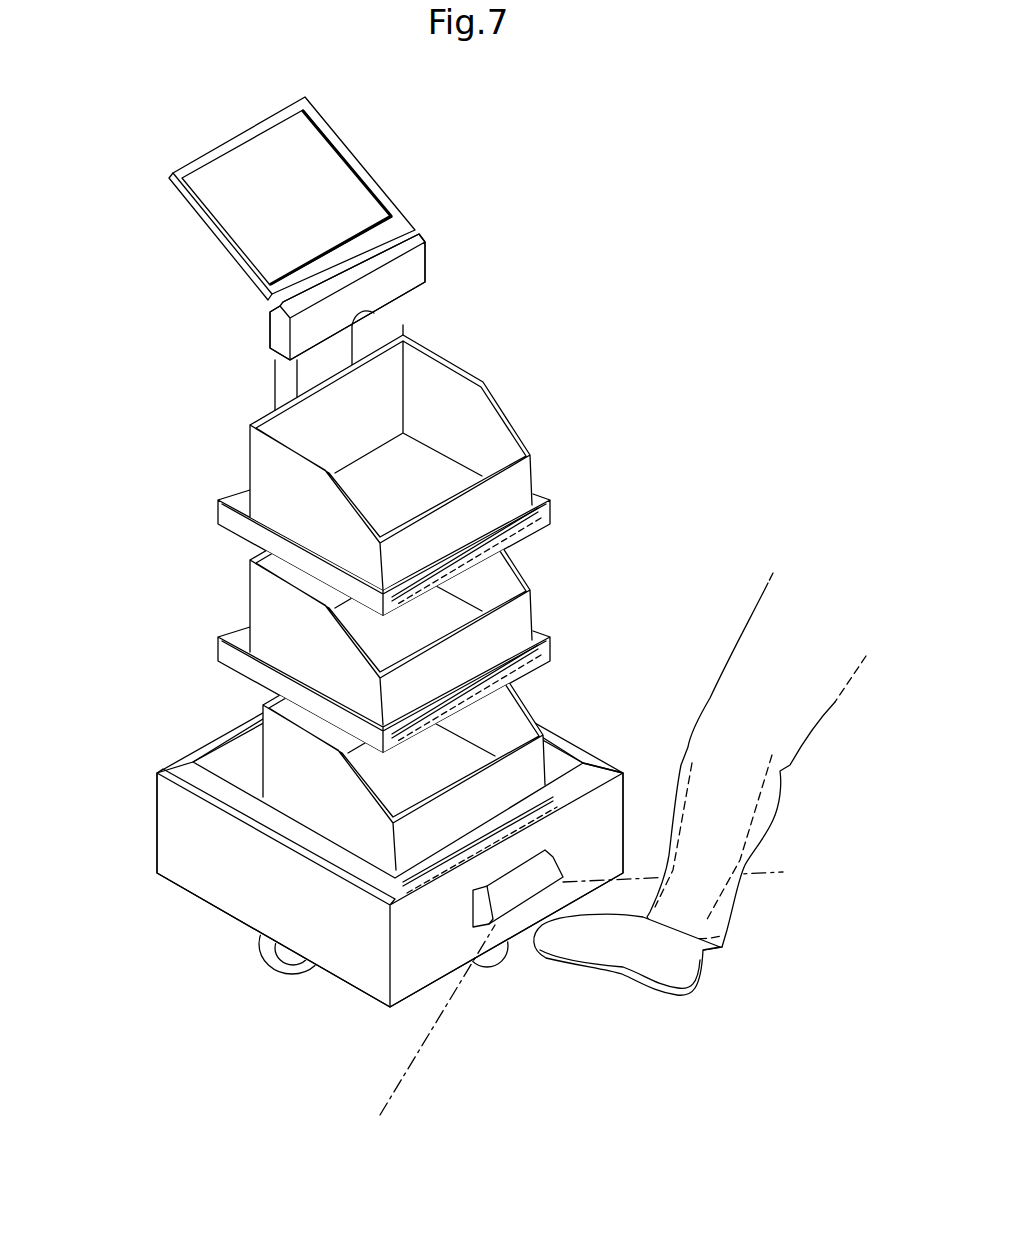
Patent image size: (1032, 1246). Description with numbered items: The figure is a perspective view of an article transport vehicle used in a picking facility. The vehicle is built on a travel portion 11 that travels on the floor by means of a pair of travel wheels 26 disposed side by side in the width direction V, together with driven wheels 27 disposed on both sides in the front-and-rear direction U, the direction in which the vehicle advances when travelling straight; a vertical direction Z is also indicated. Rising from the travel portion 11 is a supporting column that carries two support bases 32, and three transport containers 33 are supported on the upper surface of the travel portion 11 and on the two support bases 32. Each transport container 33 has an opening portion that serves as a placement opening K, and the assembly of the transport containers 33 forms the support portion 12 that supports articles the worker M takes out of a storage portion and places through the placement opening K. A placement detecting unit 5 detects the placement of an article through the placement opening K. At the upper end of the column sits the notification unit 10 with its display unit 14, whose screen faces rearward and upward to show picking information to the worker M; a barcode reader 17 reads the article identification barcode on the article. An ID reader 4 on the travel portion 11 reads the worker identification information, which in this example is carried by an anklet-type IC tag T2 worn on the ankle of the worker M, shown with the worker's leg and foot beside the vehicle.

The notification unit 10 is at (372, 174).
The display unit 14 is at (318, 165).
The barcode reader 17 is at (338, 333).
The support portion 12 is at (500, 326).
The transport container 33 is at (535, 718).
The placement opening K is at (492, 721).
The placement detecting unit 5 is at (525, 810).
The support base 32 is at (552, 648).
The travel portion 11 is at (192, 876).
The ID reader 4 is at (473, 912).
The travel wheel 26 is at (308, 970).
The driven wheel 27 is at (505, 965).
The worker M is at (798, 722).
The anklet-type IC tag T2 is at (727, 937).
The width direction V is at (188, 602).
The Z direction Z is at (78, 752).
The front-and-rear direction U is at (133, 990).